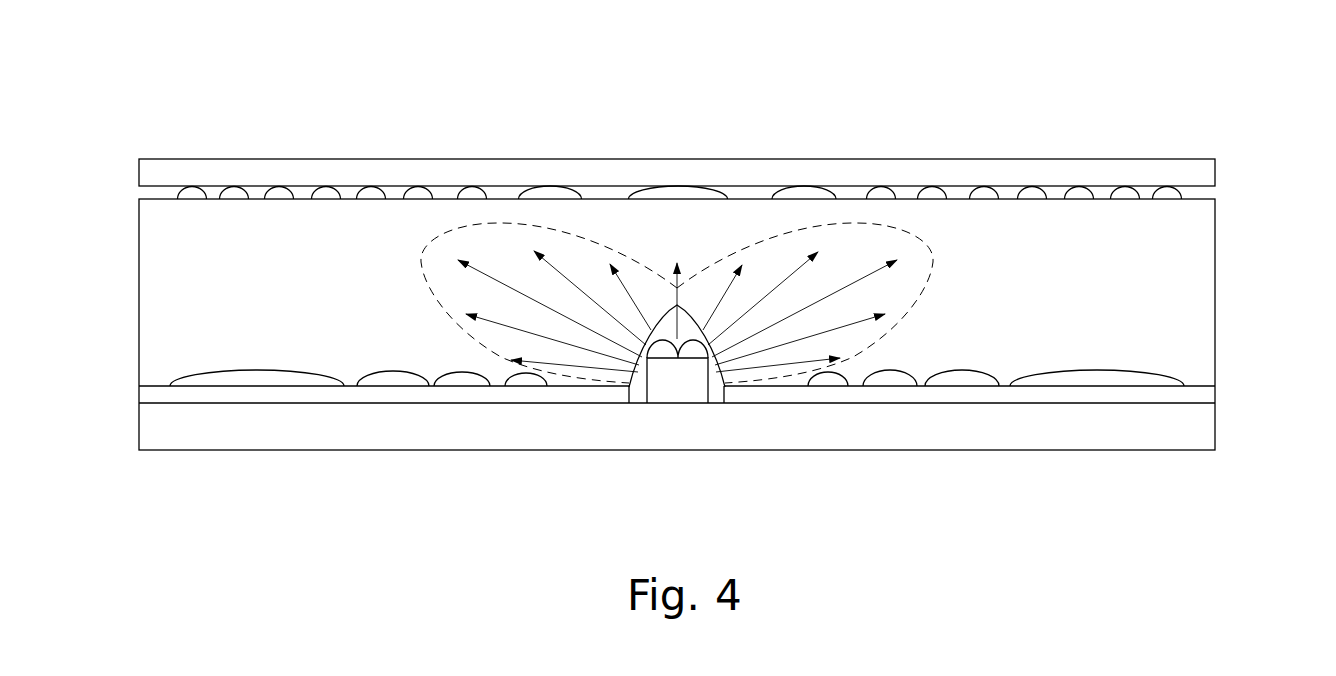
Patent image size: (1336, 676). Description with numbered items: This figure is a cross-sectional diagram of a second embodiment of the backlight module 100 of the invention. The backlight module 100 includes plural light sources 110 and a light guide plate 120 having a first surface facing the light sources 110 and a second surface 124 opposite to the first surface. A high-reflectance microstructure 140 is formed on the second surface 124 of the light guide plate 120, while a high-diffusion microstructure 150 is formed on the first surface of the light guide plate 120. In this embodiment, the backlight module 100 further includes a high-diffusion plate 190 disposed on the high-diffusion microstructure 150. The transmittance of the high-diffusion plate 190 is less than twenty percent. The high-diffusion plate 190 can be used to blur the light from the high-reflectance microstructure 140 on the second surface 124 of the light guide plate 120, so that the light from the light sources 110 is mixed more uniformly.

The backlight module 100 is at (185, 95).
The light sources 110 is at (660, 358).
The light guide plate 120 is at (1195, 295).
The second surface 124 is at (1142, 198).
The high-reflectance microstructure 140 is at (677, 197).
The high-diffusion microstructure 150 is at (1100, 375).
The high-diffusion plate 190 is at (1173, 158).